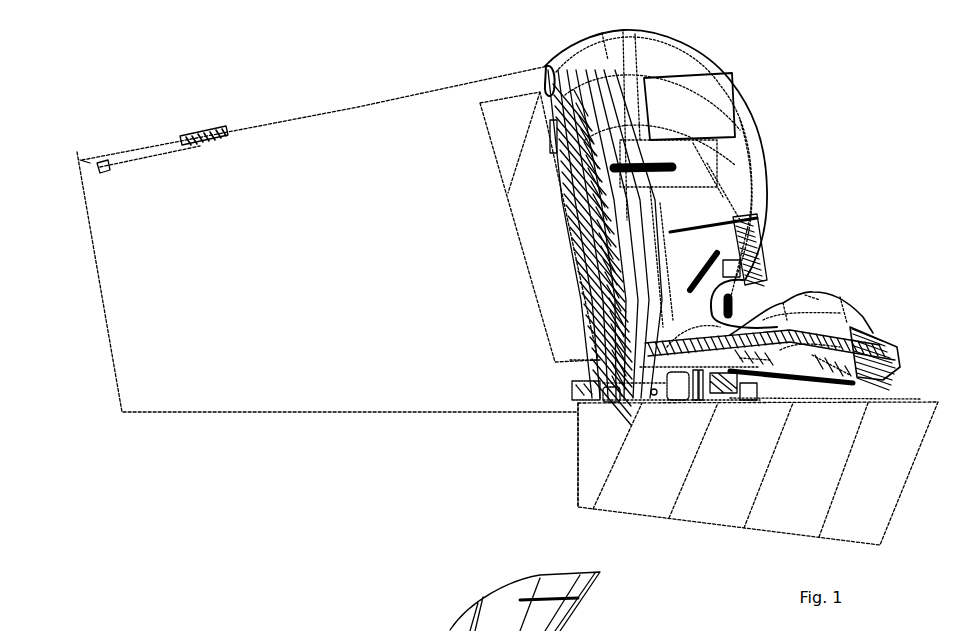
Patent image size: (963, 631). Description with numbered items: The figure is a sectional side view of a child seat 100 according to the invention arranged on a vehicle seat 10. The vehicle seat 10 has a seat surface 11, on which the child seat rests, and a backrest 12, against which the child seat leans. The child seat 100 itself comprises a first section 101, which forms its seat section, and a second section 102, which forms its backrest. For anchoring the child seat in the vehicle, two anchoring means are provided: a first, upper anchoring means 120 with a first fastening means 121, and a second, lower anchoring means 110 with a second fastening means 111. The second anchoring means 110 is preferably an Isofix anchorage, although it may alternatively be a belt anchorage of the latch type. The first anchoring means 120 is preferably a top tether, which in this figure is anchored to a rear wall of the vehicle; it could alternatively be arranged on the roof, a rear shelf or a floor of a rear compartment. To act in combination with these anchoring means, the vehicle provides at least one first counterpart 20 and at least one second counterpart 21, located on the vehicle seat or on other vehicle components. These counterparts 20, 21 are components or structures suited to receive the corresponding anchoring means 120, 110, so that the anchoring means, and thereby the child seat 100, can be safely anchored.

The vehicle seat 10 is at (577, 440).
The seat surface 11 is at (677, 408).
The backrest 12 is at (547, 138).
The first counterpart 20 is at (105, 165).
The second counterpart 21 is at (577, 420).
The child seat 100 is at (758, 115).
The first section 101 is at (883, 320).
The second section 102 is at (558, 215).
The second anchoring means 110 is at (585, 398).
The second fastening means 111 is at (573, 383).
The first anchoring means 120 is at (358, 107).
The first fastening means 121 is at (143, 147).